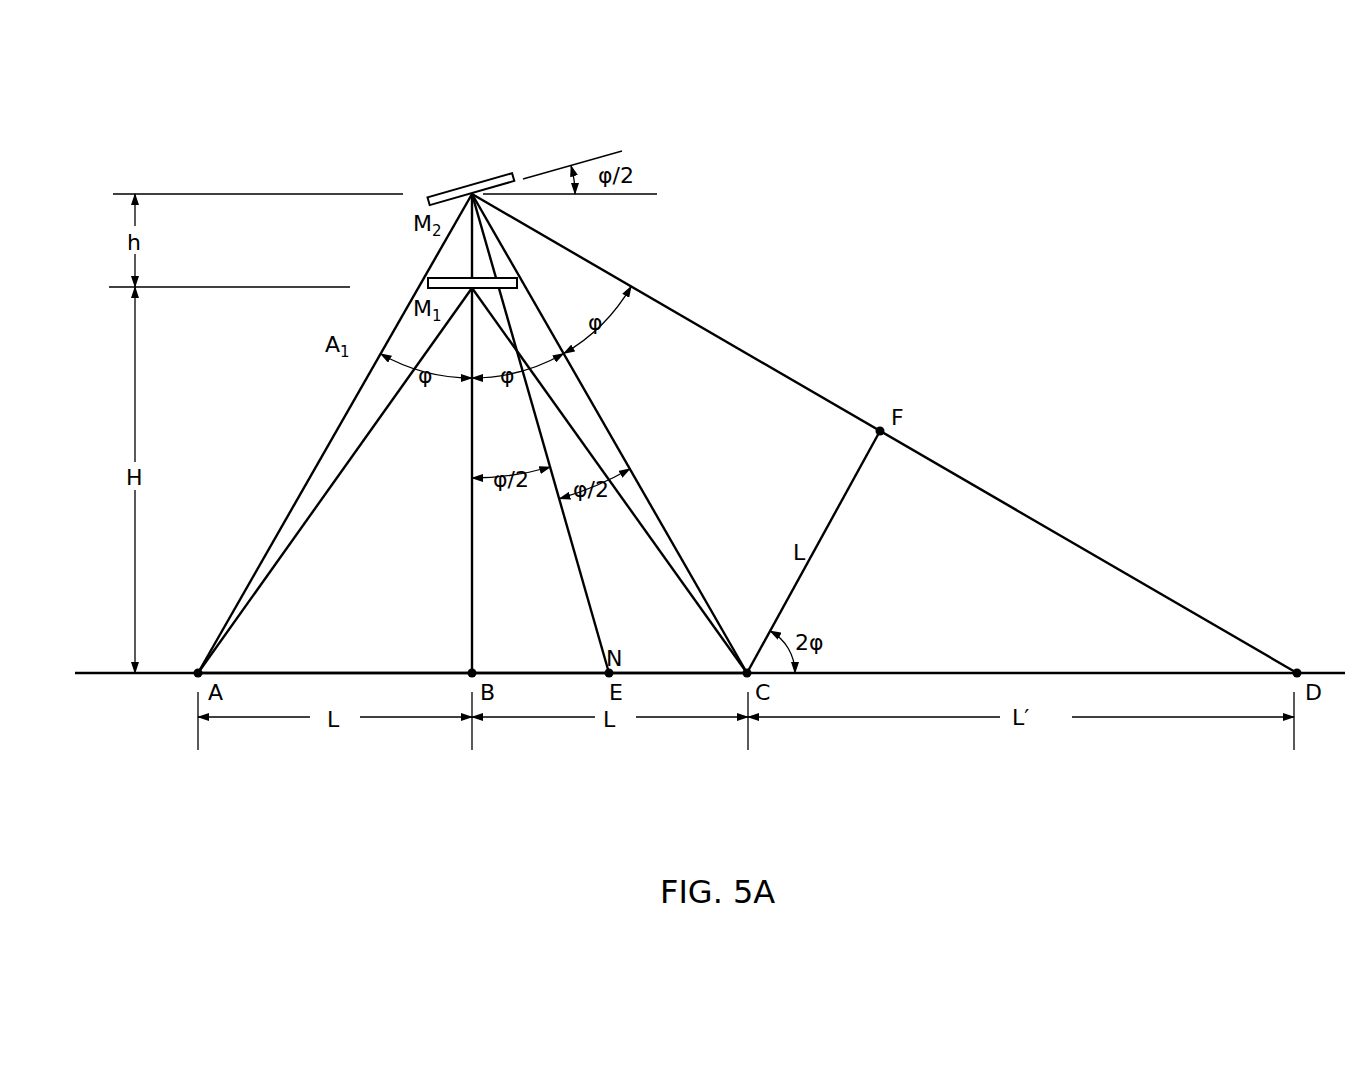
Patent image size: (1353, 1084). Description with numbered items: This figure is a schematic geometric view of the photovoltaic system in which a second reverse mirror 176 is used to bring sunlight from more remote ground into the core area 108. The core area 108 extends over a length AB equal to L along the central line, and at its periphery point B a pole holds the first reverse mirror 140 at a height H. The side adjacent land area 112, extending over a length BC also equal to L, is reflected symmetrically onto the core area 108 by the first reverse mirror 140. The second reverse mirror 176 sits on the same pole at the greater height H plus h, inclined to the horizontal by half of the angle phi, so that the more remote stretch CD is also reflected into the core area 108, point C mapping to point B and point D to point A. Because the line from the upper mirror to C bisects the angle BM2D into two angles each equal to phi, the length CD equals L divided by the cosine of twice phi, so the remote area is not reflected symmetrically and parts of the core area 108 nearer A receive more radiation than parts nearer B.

The second reverse mirror 176 is at (473, 170).
The first reverse mirror 140 is at (427, 283).
The core area 108 is at (412, 657).
The side adjacent land area 112 is at (695, 657).